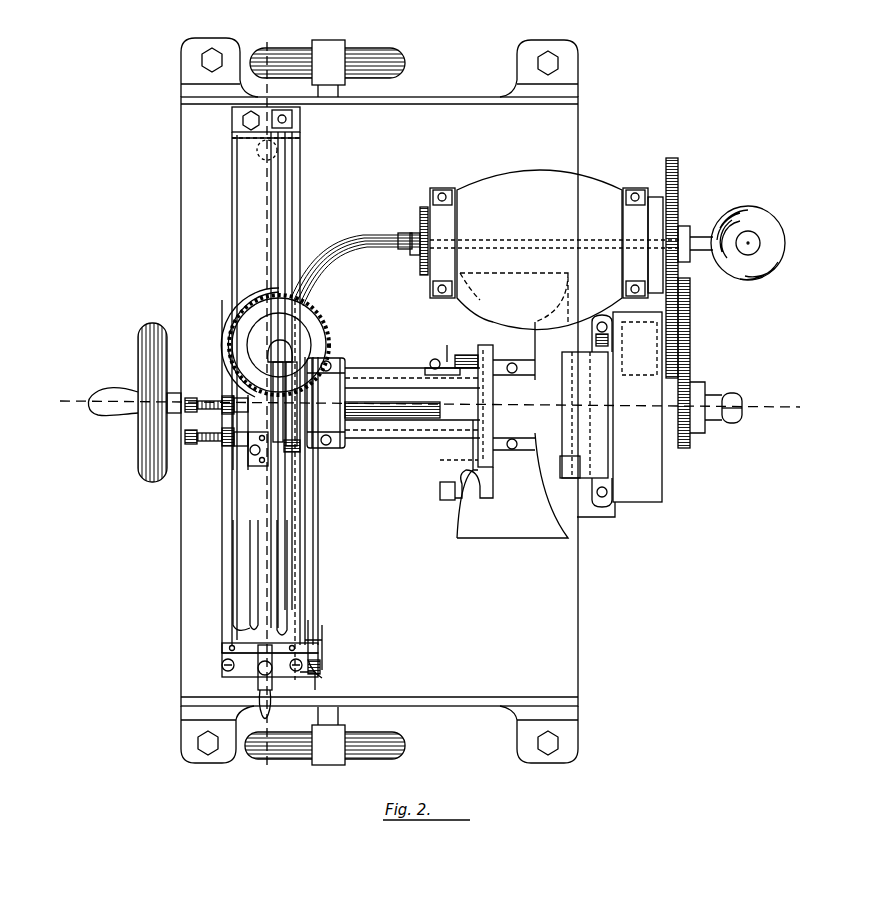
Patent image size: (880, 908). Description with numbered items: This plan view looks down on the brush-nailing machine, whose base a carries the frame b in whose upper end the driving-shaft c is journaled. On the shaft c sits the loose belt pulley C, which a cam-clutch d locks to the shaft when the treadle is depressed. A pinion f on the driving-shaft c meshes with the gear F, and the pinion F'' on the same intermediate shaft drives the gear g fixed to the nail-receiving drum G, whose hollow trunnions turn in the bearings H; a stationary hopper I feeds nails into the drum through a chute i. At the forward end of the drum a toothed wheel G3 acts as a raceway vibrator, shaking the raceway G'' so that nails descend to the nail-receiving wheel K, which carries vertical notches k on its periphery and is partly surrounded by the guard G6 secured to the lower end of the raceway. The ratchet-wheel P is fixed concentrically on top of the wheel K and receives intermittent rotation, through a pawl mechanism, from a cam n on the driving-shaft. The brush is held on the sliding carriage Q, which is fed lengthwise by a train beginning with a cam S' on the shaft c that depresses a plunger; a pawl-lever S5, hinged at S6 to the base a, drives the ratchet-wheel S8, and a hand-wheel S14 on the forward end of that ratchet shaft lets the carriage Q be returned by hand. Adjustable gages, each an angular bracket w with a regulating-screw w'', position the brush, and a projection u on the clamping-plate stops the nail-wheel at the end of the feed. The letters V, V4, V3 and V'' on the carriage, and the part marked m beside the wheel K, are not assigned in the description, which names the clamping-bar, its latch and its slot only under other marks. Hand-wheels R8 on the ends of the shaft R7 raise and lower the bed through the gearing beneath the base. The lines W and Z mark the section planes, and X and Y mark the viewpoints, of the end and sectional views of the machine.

The base a is at (398, 400).
The cranks or hand-wheels R8 is at (417, 747).
The shaft R7 is at (338, 719).
The section line Z Z is at (266, 418).
The viewpoint Y is at (397, 9).
The viewpoint X is at (377, 861).
The section line W W is at (418, 406).
The slide V is at (291, 376).
The slide slot V4 is at (282, 578).
The latch V3 is at (322, 655).
The clamp handle V'' is at (245, 682).
The carriage Q is at (318, 510).
The crank or hand-wheel S14 is at (142, 390).
The regulating-screw w'' is at (203, 421).
The angular bracket w is at (220, 446).
The projection u is at (264, 449).
The metal band or guard G6 is at (226, 345).
The nail-receiving wheel K is at (333, 324).
The vertical grooves or notches k is at (334, 349).
The ratchet-wheel P is at (279, 345).
The link bar m is at (288, 398).
The cam n is at (298, 416).
The frame b is at (326, 403).
The driving-shaft c is at (727, 386).
The nail-receiving drum G is at (555, 275).
The bearings H is at (546, 243).
The toothed wheel G3 is at (423, 208).
The raceway G'' is at (355, 260).
The gear g is at (678, 176).
The gear F is at (693, 363).
The pinion F'' is at (711, 298).
The pinion f is at (688, 447).
The chute i is at (692, 240).
The stationary hopper I is at (748, 243).
The pulley C is at (637, 407).
The cam-clutch d is at (586, 411).
The cam S' is at (504, 441).
The ratchet-wheel S8 is at (460, 358).
The pawl-lever S5 is at (458, 467).
The hinge of pawl-lever S6 is at (440, 490).